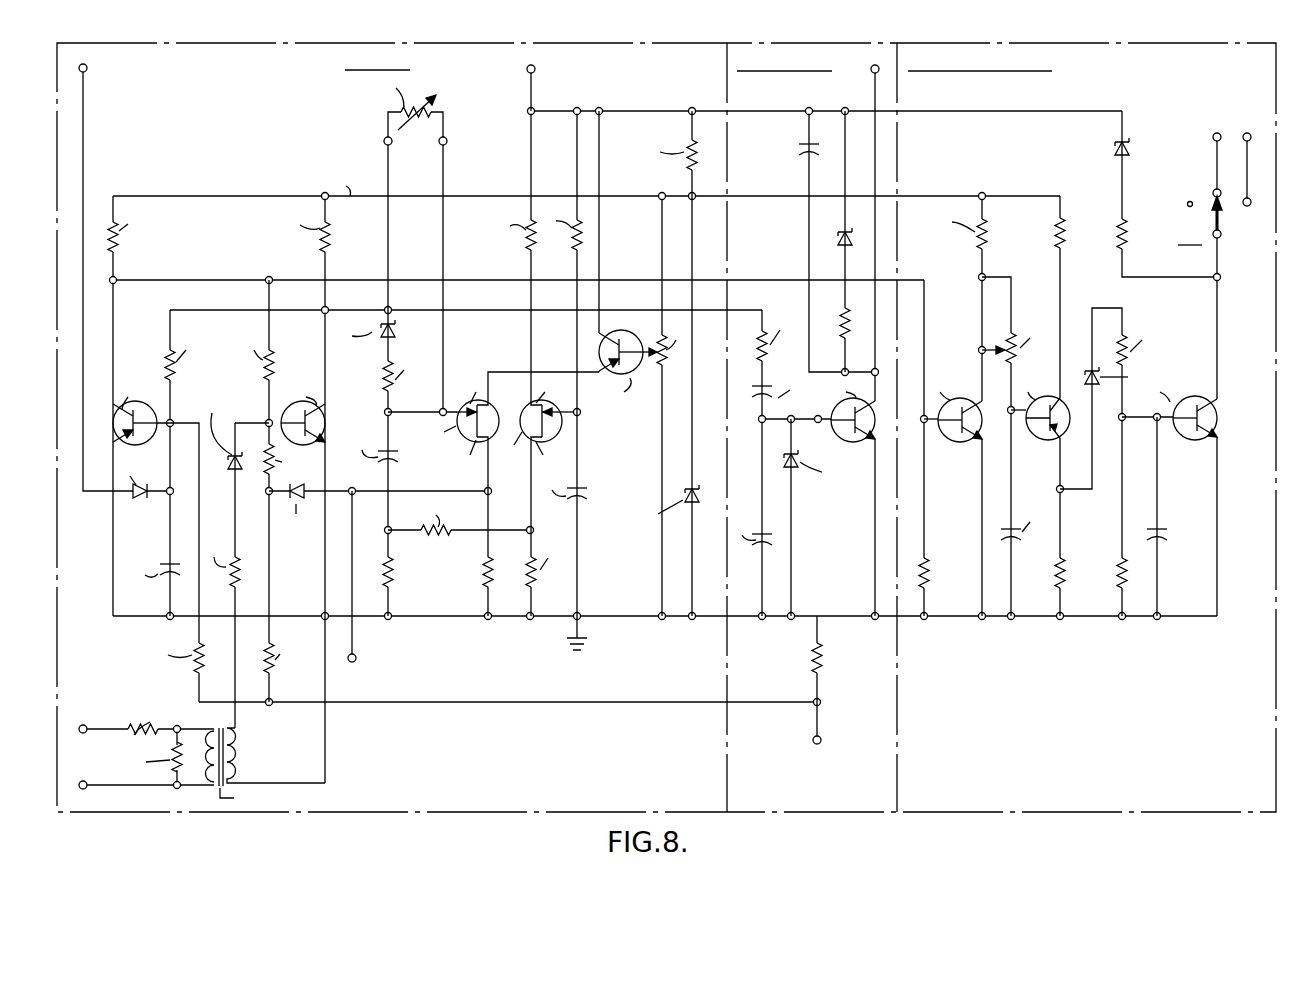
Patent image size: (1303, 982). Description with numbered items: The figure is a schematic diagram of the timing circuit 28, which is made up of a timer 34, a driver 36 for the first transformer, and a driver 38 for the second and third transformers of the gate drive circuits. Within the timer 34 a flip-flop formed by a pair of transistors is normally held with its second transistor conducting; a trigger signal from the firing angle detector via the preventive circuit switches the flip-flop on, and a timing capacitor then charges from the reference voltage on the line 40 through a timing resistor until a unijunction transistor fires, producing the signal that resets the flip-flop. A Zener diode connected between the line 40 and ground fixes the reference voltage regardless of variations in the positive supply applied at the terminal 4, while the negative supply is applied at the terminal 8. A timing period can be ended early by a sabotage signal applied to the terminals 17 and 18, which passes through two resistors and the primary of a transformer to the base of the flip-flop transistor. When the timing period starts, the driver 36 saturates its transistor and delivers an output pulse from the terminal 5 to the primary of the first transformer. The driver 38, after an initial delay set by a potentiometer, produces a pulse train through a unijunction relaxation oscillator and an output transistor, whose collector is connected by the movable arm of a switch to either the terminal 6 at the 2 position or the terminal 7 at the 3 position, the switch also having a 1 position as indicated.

The timing circuit 28 is at (682, 22).
The timer 34 is at (306, 43).
The driver for transformer T1 36 is at (820, 43).
The driver for transformers T2 and T3 38 is at (1028, 43).
The line 40 is at (265, 196).
The terminal 4 is at (543, 83).
The terminal 5 is at (867, 69).
The terminal 6 is at (1214, 152).
The terminal 7 is at (1245, 154).
The position of switch S2 2 is at (1223, 204).
The position of switch S2 3 is at (1254, 201).
The position of switch S2 1 is at (1190, 220).
The terminal 8 is at (830, 748).
The terminal 17 is at (89, 719).
The terminal 18 is at (89, 796).